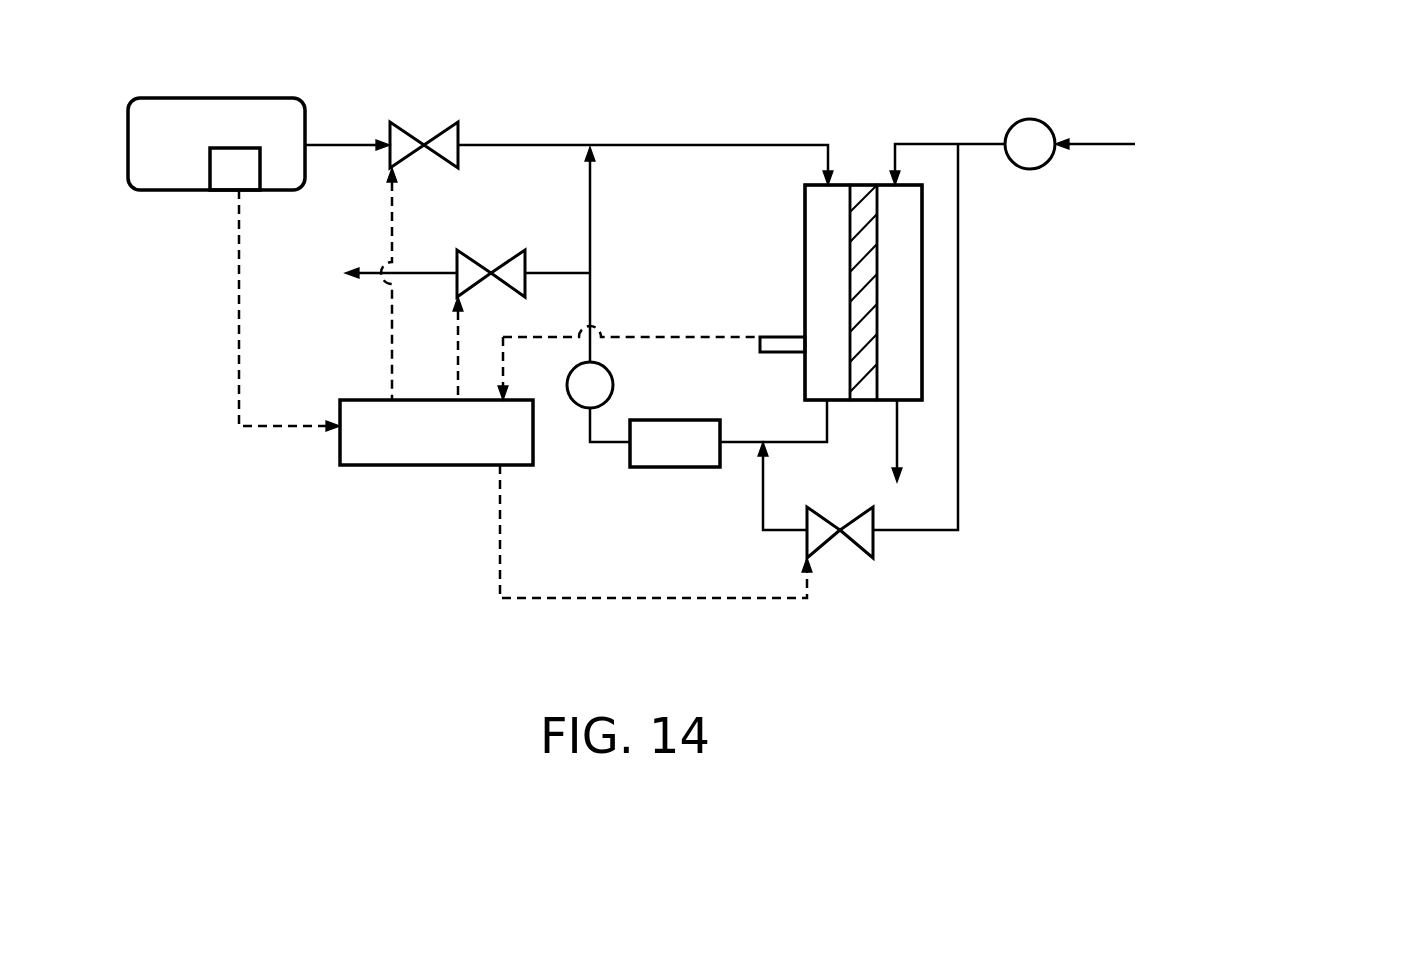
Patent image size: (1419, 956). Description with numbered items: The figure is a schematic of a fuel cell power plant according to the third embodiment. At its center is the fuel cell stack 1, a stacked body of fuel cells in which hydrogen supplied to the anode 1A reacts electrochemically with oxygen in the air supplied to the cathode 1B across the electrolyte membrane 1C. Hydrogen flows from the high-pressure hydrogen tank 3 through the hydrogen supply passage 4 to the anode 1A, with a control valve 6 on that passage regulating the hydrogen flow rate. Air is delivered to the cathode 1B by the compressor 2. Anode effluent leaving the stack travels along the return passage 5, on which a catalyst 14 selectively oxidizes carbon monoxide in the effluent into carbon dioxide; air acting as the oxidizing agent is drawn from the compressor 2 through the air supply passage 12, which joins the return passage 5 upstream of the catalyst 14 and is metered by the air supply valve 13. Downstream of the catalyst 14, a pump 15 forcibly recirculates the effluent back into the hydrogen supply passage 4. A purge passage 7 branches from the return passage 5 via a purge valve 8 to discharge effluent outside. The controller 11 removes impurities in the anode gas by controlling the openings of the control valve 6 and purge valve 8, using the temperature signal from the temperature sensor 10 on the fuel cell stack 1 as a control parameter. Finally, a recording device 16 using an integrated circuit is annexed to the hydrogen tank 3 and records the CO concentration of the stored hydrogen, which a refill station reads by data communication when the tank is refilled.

The fuel cell stack 1 is at (922, 270).
The anode 1A is at (850, 200).
The cathode 1B is at (878, 360).
The electrolyte membrane 1C is at (862, 317).
The compressor 2 is at (1030, 169).
The hydrogen tank 3 is at (232, 98).
The hydrogen supply passage 4 is at (728, 145).
The return passage 5 is at (590, 218).
The control valve 6 is at (405, 124).
The purge passage 7 is at (425, 273).
The purge valve 8 is at (470, 254).
The temperature sensor 10 is at (780, 337).
The controller 11 is at (447, 465).
The air supply passage 12 is at (958, 442).
The air supply valve 13 is at (826, 545).
The catalyst 14 is at (645, 467).
The pump 15 is at (613, 385).
The recording device 16 is at (218, 190).